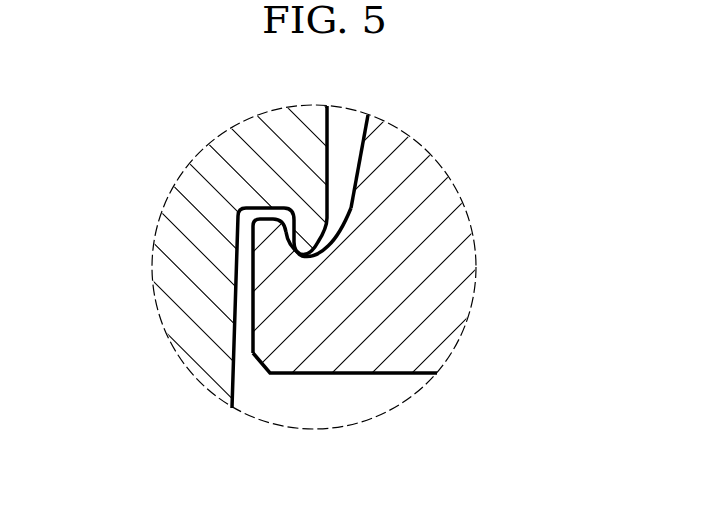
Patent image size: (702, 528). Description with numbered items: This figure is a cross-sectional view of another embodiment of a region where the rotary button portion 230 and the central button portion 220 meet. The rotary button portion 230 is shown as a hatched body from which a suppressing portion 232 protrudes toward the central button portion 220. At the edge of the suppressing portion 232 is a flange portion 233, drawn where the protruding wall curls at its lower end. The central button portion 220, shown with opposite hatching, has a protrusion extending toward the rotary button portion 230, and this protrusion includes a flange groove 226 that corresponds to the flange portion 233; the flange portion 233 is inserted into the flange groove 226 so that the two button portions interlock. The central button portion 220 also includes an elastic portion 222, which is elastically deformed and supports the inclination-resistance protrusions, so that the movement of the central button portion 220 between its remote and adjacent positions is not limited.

The central button portion 220 is at (357, 386).
The elastic portion 222 is at (292, 347).
The flange groove 226 is at (308, 257).
The rotary button portion 230 is at (159, 241).
The suppressing portion 232 is at (312, 153).
The flange portion 233 is at (313, 228).